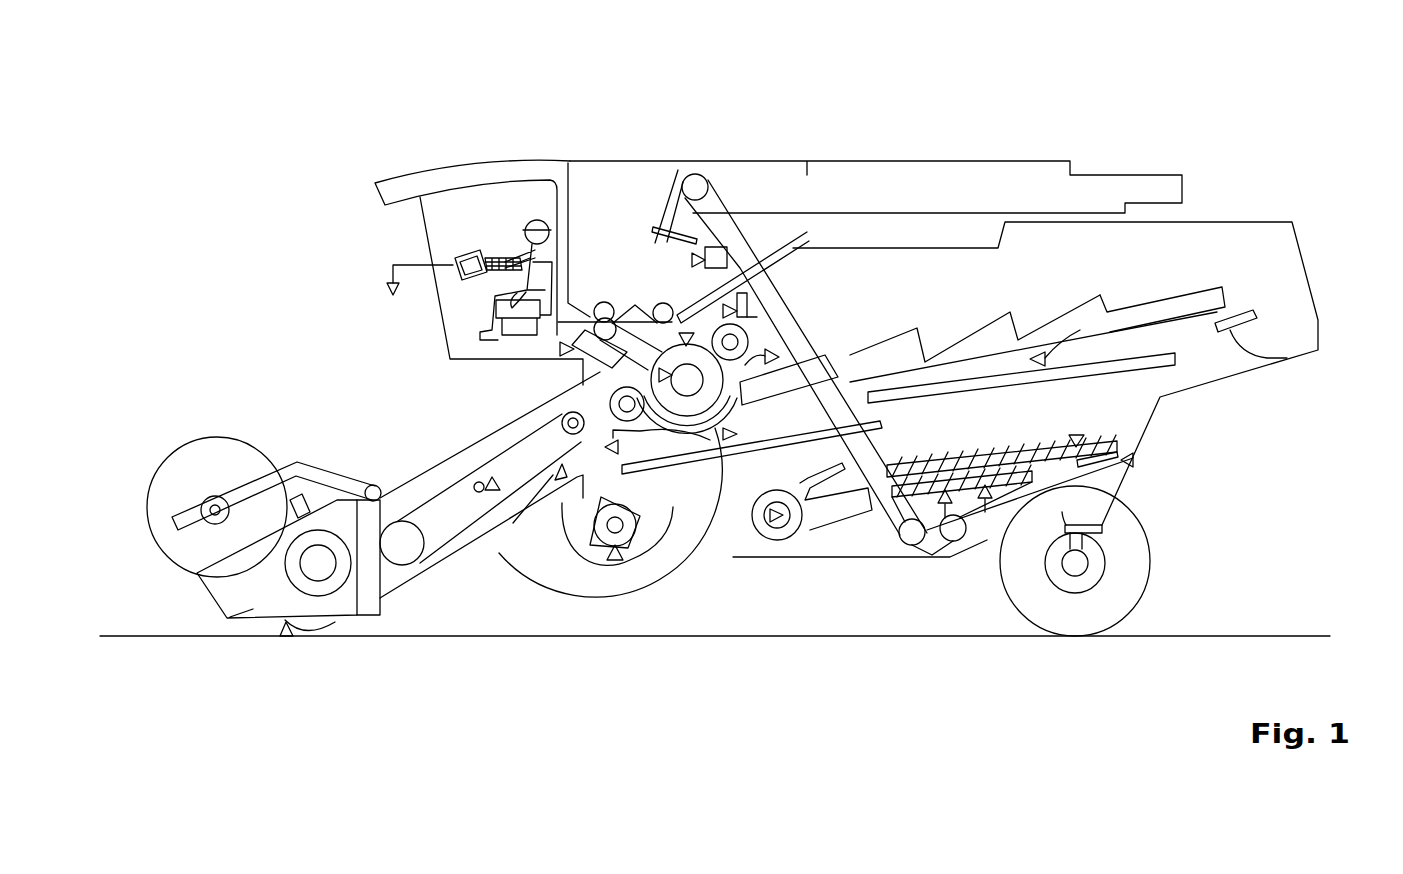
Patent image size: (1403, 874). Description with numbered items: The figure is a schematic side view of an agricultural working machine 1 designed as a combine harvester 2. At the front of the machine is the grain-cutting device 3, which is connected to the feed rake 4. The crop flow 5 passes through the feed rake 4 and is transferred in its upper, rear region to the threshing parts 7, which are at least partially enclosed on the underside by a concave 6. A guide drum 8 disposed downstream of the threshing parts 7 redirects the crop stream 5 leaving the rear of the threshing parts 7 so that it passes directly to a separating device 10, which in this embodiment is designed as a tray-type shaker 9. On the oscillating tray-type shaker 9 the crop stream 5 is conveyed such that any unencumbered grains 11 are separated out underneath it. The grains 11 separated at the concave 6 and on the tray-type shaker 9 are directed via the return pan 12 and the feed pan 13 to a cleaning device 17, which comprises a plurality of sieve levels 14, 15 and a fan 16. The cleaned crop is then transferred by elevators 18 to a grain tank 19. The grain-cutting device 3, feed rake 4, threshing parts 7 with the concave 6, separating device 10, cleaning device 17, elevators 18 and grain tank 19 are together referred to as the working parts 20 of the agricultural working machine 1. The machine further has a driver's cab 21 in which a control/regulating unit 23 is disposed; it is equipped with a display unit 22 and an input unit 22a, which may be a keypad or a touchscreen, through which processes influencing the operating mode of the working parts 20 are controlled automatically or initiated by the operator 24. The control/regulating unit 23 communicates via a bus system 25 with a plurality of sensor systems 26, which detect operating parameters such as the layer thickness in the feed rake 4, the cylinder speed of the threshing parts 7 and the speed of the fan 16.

The agricultural working machine 1 is at (340, 226).
The combine harvester 2 is at (1010, 433).
The grain-cutting device 3 is at (276, 443).
The feed rake 4 is at (425, 490).
The crop flow 5 is at (535, 545).
The concave 6 is at (668, 400).
The threshing parts 7 is at (686, 333).
The guide drum 8 is at (733, 332).
The tray-type shaker 9 is at (1203, 300).
The separating device 10 is at (1033, 338).
The unencumbered grains 11 is at (1145, 347).
The return pan 12 is at (1147, 367).
The feed pan 13 is at (850, 440).
The sieve level 14 is at (1008, 483).
The sieve level 15 is at (1057, 457).
The fan 16 is at (800, 530).
The cleaning device 17 is at (952, 545).
The elevators 18 is at (780, 307).
The grain tank 19 is at (614, 175).
The working parts 20 is at (789, 352).
The driver's cab 21 is at (497, 198).
The display unit 22 is at (468, 247).
The input unit 22a is at (517, 293).
The control/regulating unit 23 is at (508, 243).
The operator 24 is at (543, 220).
The bus system 25 is at (392, 285).
The sensor systems 26 is at (770, 522).